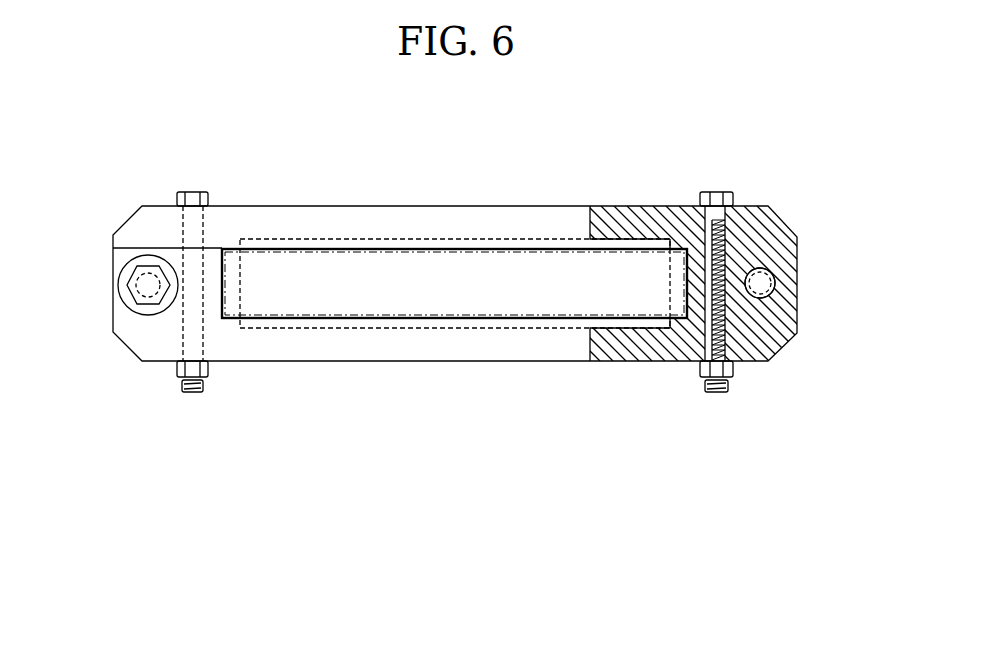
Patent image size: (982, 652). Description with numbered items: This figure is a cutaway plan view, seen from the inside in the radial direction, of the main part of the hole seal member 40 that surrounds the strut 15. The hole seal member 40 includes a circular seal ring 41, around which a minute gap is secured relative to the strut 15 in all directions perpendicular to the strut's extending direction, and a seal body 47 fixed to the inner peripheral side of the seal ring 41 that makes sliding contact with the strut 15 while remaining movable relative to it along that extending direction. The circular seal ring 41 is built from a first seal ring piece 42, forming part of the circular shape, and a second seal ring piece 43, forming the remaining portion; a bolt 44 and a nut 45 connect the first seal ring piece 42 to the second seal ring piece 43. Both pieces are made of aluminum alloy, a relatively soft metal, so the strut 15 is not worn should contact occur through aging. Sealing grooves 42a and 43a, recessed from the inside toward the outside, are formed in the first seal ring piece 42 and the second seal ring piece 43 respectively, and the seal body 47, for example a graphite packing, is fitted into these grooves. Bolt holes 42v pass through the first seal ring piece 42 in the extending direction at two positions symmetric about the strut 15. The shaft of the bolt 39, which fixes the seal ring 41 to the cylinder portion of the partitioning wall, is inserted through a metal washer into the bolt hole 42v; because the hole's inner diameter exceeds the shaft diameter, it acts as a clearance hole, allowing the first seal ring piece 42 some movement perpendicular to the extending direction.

The strut 15 is at (465, 250).
The bolt 39 is at (135, 287).
The hole seal member 40 is at (141, 381).
The circular seal ring 41 is at (760, 368).
The first seal ring piece 42 is at (260, 343).
The sealing groove 42a is at (602, 324).
The bolt hole 42v is at (769, 299).
The second seal ring piece 43 is at (275, 212).
The sealing groove 43a is at (602, 241).
The bolt 44 is at (717, 378).
The nut 45 is at (714, 198).
The seal body 47 is at (642, 242).